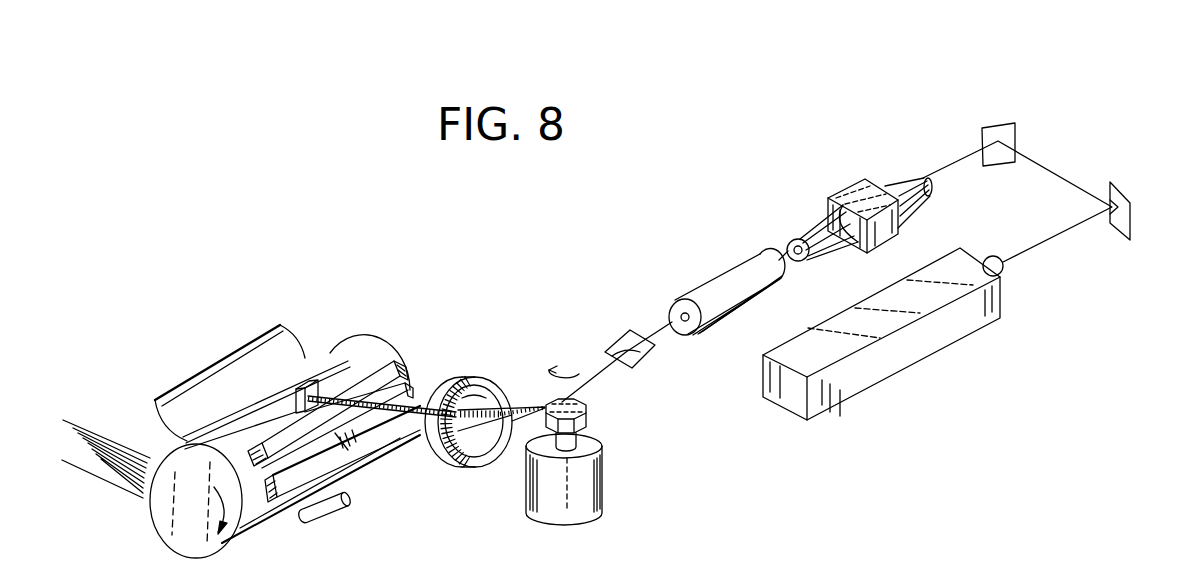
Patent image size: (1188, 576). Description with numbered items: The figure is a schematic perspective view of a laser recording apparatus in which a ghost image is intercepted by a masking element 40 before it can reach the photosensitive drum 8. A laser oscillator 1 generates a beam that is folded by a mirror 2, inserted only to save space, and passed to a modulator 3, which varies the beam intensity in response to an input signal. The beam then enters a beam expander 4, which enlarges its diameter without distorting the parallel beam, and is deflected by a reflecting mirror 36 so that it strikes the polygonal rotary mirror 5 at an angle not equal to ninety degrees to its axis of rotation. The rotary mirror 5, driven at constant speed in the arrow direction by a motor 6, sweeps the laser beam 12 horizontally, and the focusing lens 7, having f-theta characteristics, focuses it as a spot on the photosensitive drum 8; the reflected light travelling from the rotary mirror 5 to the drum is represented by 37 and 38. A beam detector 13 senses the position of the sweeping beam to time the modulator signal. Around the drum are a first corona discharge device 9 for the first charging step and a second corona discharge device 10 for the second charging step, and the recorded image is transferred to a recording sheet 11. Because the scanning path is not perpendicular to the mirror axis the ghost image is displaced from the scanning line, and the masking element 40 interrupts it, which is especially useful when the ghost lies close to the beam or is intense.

The laser oscillator 1 is at (865, 367).
The mirror 2 is at (997, 125).
The modulator 3 is at (868, 186).
The beam expander 4 is at (712, 280).
The polygonal rotary mirror 5 is at (577, 413).
The motor 6 is at (582, 473).
The focusing lens 7 is at (450, 464).
The photosensitive drum 8 is at (370, 362).
The first corona discharge device 9 is at (398, 367).
The second corona discharge device 10 is at (418, 411).
The recording sheet 11 is at (283, 334).
The laser beam 12 is at (410, 441).
The beam detector 13 is at (327, 520).
The reflecting mirror 36 is at (613, 340).
The laser light reflected from the rotary mirror 37 is at (516, 429).
The laser light reflected from the rotary mirror 38 is at (350, 399).
The masking element 40 is at (311, 388).